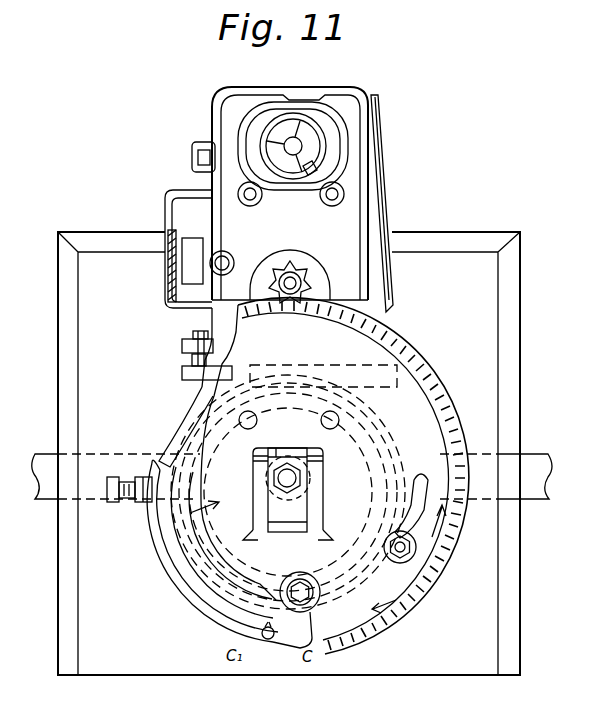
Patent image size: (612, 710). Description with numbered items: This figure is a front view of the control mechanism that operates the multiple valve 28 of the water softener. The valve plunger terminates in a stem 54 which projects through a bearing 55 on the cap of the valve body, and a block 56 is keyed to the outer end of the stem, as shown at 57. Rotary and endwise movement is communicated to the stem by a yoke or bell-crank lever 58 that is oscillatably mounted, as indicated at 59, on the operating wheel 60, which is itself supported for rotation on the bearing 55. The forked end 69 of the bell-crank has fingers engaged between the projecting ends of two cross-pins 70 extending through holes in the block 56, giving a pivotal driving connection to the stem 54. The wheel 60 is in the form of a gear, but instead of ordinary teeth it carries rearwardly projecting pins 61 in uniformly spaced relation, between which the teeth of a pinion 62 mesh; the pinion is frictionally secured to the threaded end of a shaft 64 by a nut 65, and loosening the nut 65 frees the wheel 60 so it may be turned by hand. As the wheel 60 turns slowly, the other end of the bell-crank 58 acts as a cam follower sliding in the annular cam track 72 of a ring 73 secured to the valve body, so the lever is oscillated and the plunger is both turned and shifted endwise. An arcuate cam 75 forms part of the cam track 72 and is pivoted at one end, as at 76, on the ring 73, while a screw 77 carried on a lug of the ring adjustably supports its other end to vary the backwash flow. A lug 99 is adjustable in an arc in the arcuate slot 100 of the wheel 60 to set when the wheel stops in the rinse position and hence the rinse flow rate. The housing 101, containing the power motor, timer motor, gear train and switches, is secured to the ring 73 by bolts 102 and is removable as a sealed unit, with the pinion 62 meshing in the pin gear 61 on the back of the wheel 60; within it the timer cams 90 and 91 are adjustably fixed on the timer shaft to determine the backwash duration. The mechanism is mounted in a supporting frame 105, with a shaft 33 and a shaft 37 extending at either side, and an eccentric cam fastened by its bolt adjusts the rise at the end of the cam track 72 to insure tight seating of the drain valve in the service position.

The multiple valve 28 is at (197, 516).
The shaft 33 is at (540, 500).
The shaft 37 is at (45, 502).
The stem 54 is at (292, 496).
The bearing 55 is at (268, 483).
The block 56 is at (280, 455).
The key 57 is at (308, 458).
The bell-crank lever 58 is at (215, 568).
The pivot mounting 59 is at (228, 600).
The operating wheel 60 is at (453, 430).
The pins 61 is at (412, 348).
The pinion 62 is at (318, 270).
The shaft 64 is at (290, 262).
The nut 65 is at (302, 283).
The forked end 69 is at (323, 485).
The cross-pins 70 is at (266, 466).
The annular cam track 72 is at (185, 422).
The ring 73 is at (195, 392).
The arcuate cam 75 is at (172, 562).
The cam pivot 76 is at (270, 640).
The screw 77 is at (113, 503).
The cam 90 is at (296, 176).
The cam 91 is at (310, 176).
The lug 99 is at (416, 547).
The arcuate slot 100 is at (421, 474).
The housing 101 is at (384, 226).
The bolts 102 is at (192, 336).
The frame 105 is at (521, 390).